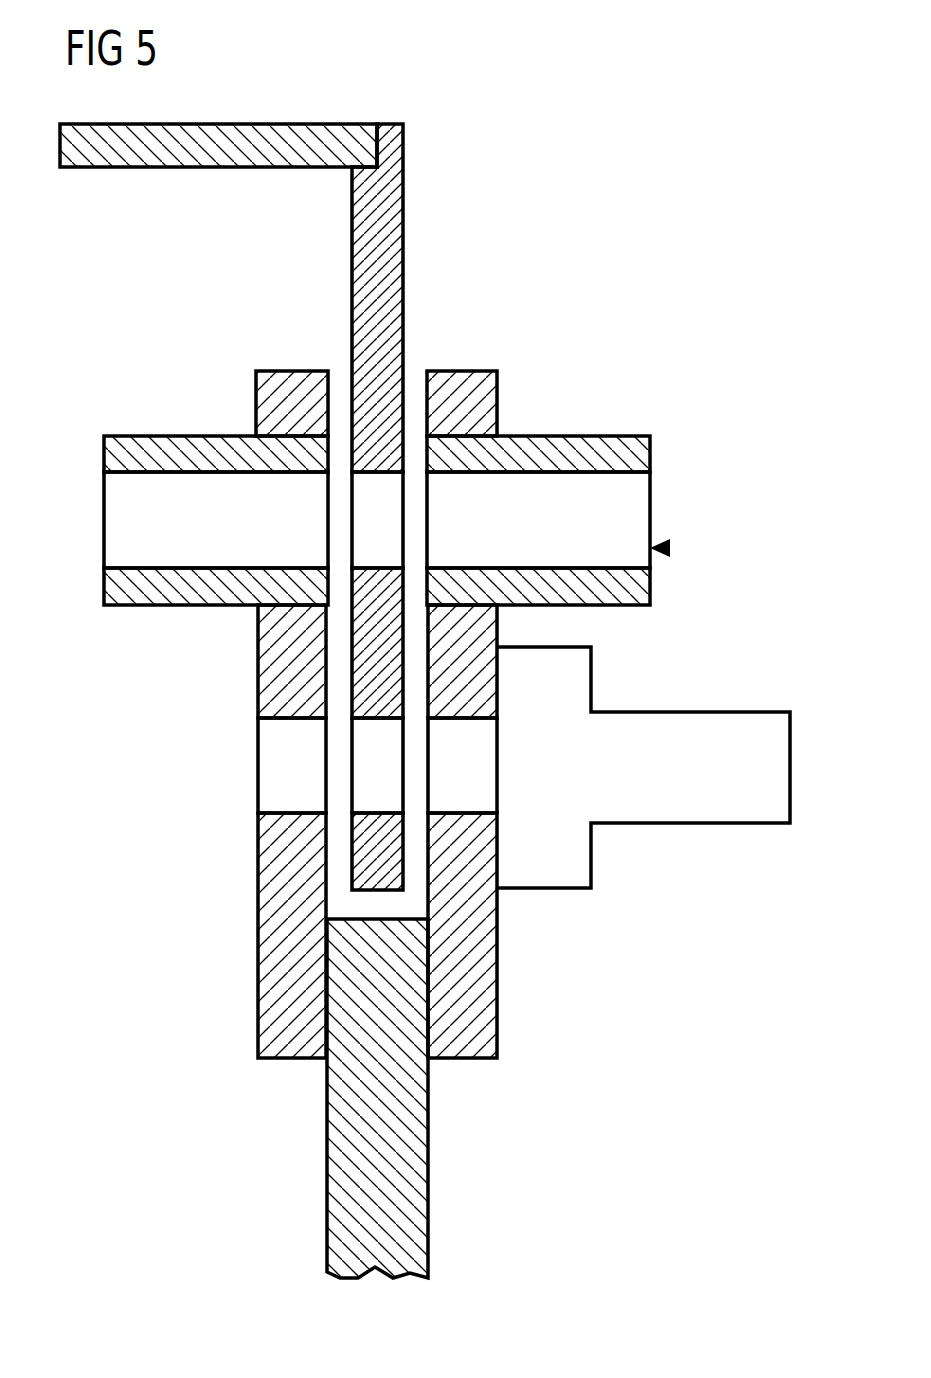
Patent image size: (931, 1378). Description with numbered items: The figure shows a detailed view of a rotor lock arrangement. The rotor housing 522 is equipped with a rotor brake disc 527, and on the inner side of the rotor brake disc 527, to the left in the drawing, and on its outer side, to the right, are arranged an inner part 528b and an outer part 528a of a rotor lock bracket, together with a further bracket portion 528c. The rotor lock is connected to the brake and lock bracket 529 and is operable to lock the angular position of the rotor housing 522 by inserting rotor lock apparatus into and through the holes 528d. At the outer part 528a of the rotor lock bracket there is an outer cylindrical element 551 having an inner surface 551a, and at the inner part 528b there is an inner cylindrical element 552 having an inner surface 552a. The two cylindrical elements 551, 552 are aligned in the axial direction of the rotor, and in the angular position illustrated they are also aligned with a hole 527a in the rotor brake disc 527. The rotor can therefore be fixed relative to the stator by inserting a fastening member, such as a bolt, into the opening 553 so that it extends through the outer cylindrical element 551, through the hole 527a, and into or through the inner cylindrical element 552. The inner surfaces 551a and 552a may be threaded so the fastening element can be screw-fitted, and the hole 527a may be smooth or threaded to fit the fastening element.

The rotor housing 522 is at (112, 158).
The rotor brake disc 527 is at (393, 193).
The hole in the rotor brake disc 527a is at (365, 473).
The inner cylindrical element 552 is at (178, 443).
The inner surface of inner cylindrical element 552a is at (178, 567).
The outer cylindrical element 551 is at (568, 442).
The inner surface of outer cylindrical element 551a is at (517, 568).
The opening 553 is at (668, 548).
The inner part of rotor lock bracket 528b is at (267, 667).
The holes 528d is at (450, 748).
The outer part of rotor lock bracket 528a is at (488, 993).
The holder flange 528c is at (678, 807).
The brake and lock bracket 529 is at (415, 1143).